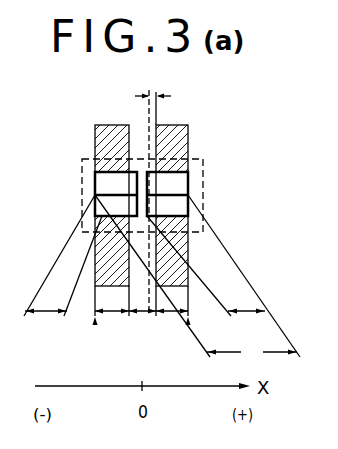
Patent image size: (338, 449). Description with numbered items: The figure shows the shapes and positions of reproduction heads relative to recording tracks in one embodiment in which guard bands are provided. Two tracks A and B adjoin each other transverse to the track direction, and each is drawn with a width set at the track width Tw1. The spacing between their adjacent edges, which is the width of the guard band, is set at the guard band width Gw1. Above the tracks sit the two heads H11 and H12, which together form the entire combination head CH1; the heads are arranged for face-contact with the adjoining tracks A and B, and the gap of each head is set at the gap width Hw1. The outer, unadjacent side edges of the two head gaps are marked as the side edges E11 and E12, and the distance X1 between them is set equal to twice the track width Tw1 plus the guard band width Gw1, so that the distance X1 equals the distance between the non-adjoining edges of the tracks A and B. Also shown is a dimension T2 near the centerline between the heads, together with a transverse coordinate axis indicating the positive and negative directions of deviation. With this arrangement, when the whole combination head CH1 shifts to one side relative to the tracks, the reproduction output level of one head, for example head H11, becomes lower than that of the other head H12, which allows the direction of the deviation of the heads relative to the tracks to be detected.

The track A is at (112, 207).
The track B is at (172, 207).
The head H11 is at (100, 183).
The head H12 is at (185, 181).
The combination head CH1 is at (204, 196).
The thickness / offset dimension T2 is at (153, 83).
The gap width Hw1 is at (146, 324).
The side edge E11 is at (96, 332).
The side edge E12 is at (201, 324).
The track width Tw1 is at (113, 313).
The guard band width Gw1 is at (142, 313).
The distance X1 is at (252, 356).